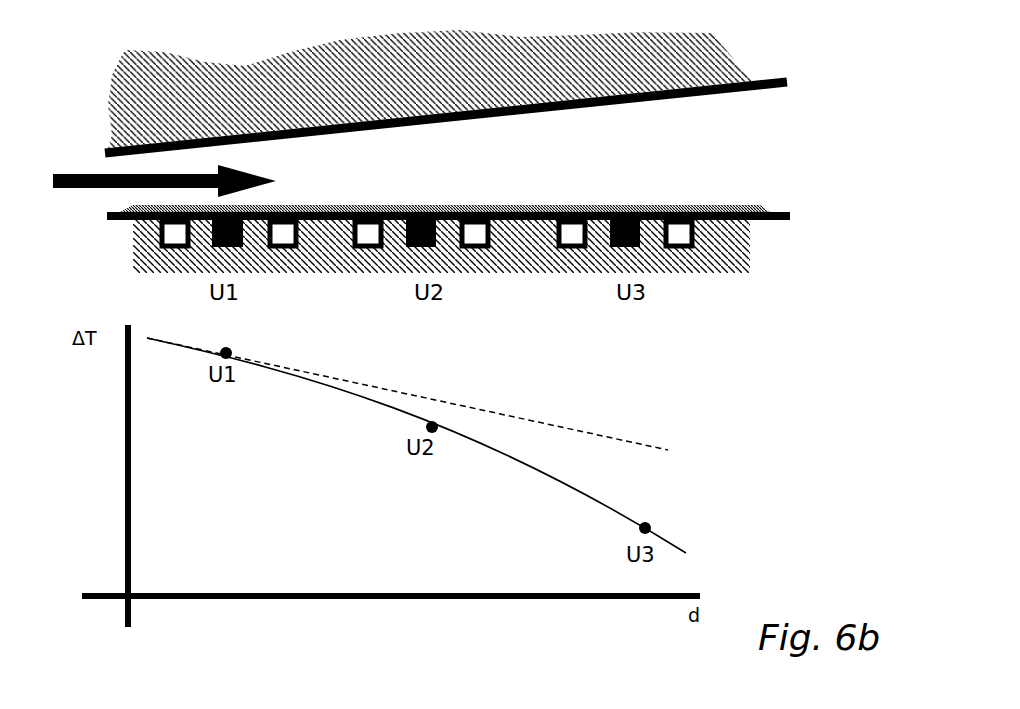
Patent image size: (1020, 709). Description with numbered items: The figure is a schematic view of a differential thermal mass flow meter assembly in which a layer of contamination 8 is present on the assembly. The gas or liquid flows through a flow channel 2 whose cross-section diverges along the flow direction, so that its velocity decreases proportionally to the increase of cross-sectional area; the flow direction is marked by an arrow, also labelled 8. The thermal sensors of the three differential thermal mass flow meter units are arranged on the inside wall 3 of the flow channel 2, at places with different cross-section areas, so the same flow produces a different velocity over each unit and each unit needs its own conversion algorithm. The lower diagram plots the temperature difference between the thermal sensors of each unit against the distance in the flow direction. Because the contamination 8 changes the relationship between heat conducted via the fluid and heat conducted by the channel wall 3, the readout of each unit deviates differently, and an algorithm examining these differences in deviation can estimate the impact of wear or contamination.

The flow channel 2 is at (505, 163).
The inside wall 3 is at (757, 207).
The layer of contamination 8 is at (90, 172).